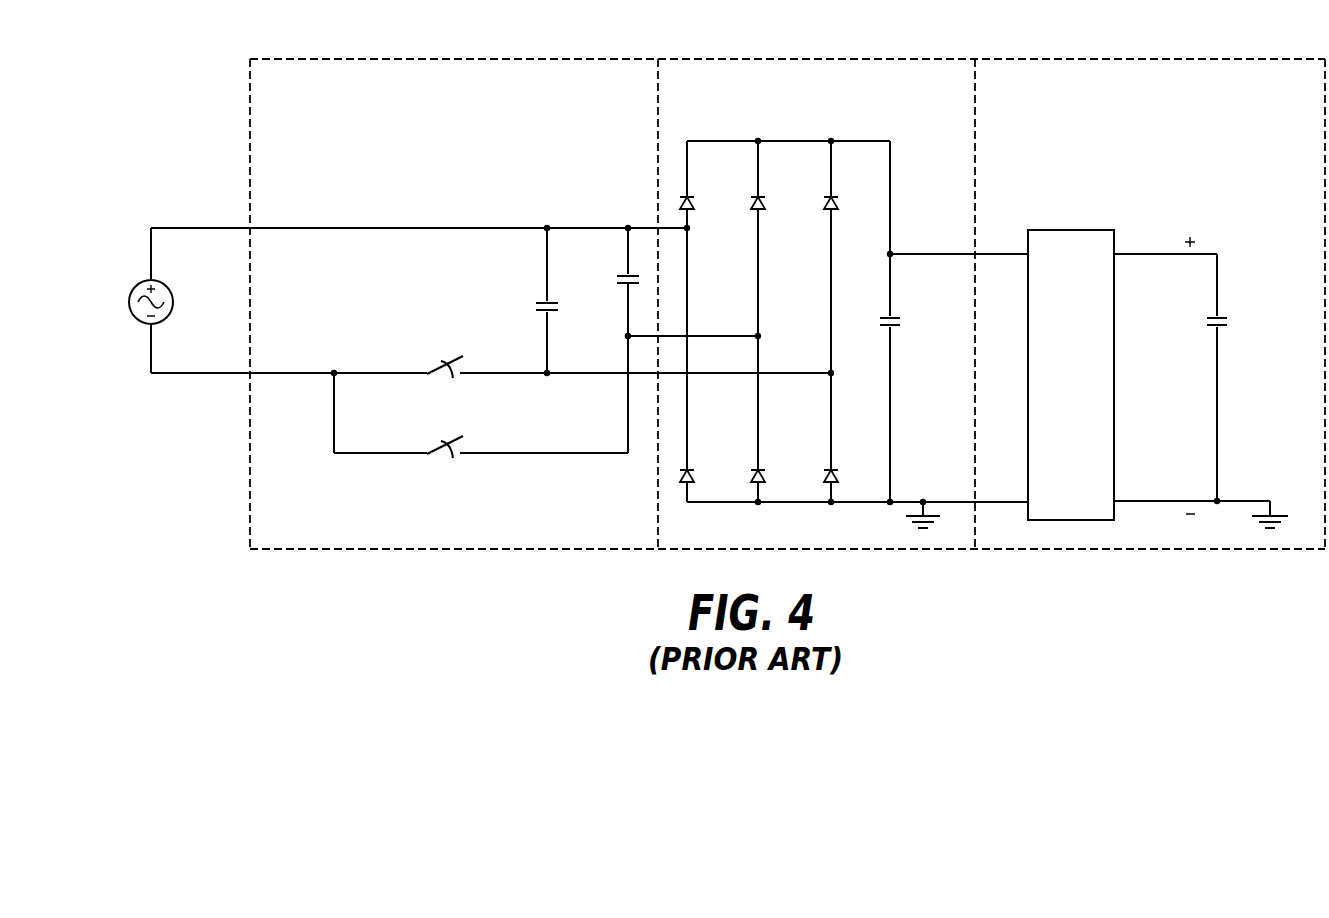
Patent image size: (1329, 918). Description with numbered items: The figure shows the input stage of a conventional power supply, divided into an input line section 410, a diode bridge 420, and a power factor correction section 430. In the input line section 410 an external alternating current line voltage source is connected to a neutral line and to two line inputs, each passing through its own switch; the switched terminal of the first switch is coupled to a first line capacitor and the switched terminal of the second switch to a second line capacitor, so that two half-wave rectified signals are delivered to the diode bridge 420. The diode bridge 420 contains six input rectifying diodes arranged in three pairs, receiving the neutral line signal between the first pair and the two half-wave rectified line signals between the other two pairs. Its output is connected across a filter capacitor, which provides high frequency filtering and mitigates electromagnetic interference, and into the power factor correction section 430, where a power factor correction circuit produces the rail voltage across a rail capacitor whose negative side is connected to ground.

The input line section 410 is at (366, 128).
The diode bridge 420 is at (716, 128).
The power factor correction section 430 is at (1031, 128).